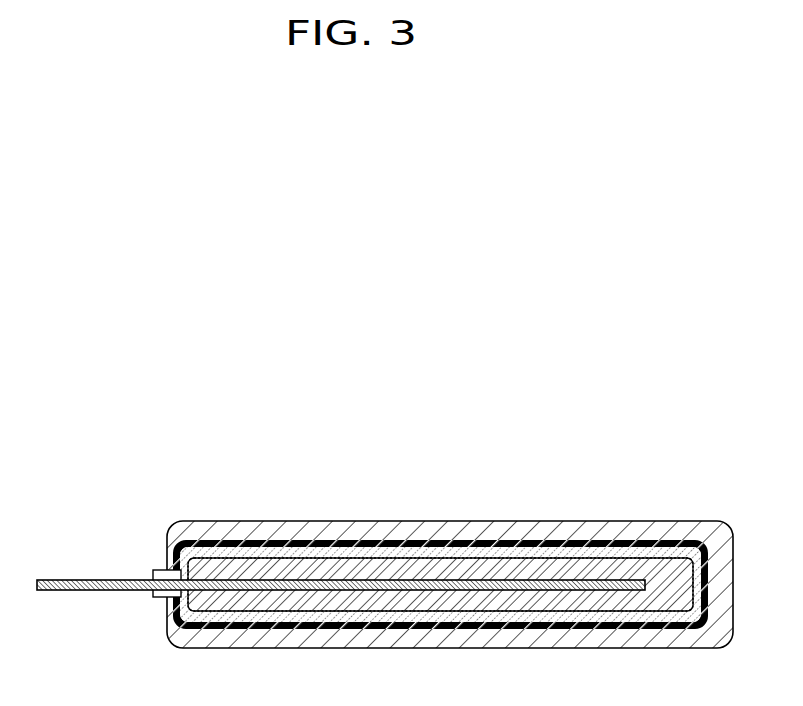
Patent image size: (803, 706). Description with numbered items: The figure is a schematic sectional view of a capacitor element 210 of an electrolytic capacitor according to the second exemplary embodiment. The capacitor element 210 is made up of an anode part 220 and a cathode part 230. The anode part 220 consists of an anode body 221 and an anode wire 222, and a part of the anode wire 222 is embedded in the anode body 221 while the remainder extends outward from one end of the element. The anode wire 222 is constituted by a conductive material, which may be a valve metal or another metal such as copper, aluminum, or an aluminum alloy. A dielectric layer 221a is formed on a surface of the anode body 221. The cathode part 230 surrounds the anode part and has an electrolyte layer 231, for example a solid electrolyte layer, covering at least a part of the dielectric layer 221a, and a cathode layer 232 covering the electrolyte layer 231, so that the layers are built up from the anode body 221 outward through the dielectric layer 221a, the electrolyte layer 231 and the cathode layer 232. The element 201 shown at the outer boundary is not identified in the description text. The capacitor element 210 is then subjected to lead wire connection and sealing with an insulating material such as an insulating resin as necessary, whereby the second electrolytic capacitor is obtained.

The lead terminal 201 is at (90, 577).
The capacitor element 210 is at (95, 383).
The anode part 220 is at (512, 478).
The anode body 221 is at (386, 568).
The dielectric layer 221a is at (435, 565).
The anode wire 222 is at (487, 562).
The cathode part 230 is at (312, 467).
The electrolyte layer 231 is at (232, 544).
The cathode layer 232 is at (295, 537).